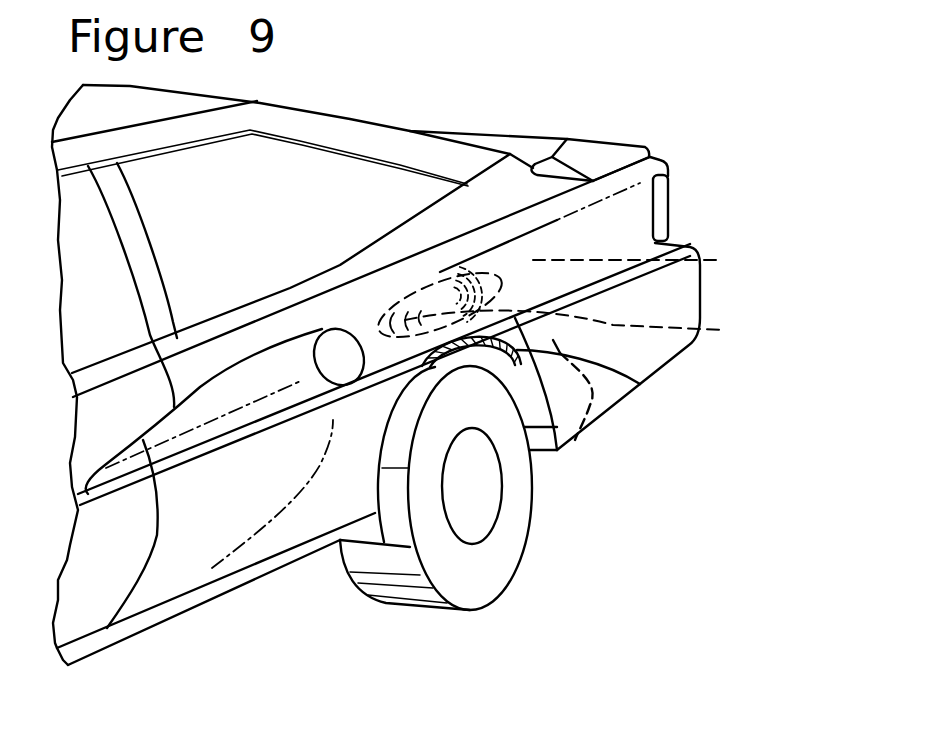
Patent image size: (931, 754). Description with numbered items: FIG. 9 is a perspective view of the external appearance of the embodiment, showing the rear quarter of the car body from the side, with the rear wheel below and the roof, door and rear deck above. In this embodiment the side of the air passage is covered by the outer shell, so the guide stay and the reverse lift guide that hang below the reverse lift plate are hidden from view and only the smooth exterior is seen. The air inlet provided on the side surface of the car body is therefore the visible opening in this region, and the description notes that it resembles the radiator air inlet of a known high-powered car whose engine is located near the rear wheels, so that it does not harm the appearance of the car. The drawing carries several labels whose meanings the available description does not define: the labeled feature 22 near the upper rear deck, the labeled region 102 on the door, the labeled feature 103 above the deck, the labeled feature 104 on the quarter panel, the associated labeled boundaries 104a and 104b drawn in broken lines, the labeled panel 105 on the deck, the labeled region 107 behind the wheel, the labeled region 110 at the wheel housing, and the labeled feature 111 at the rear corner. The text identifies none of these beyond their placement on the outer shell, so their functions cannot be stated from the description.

The sensor module 22 is at (550, 158).
The vehicle door 102 is at (200, 400).
The rear window 103 is at (598, 128).
The fuel filler door sensor 104 is at (334, 348).
The detection zone boundary 104a is at (656, 258).
The detection zone boundary 104b is at (575, 305).
The deck lid panel 105 is at (622, 155).
The rear quarter panel 107 is at (602, 372).
The wheel housing 110 is at (542, 413).
The tail lamp 111 is at (543, 217).